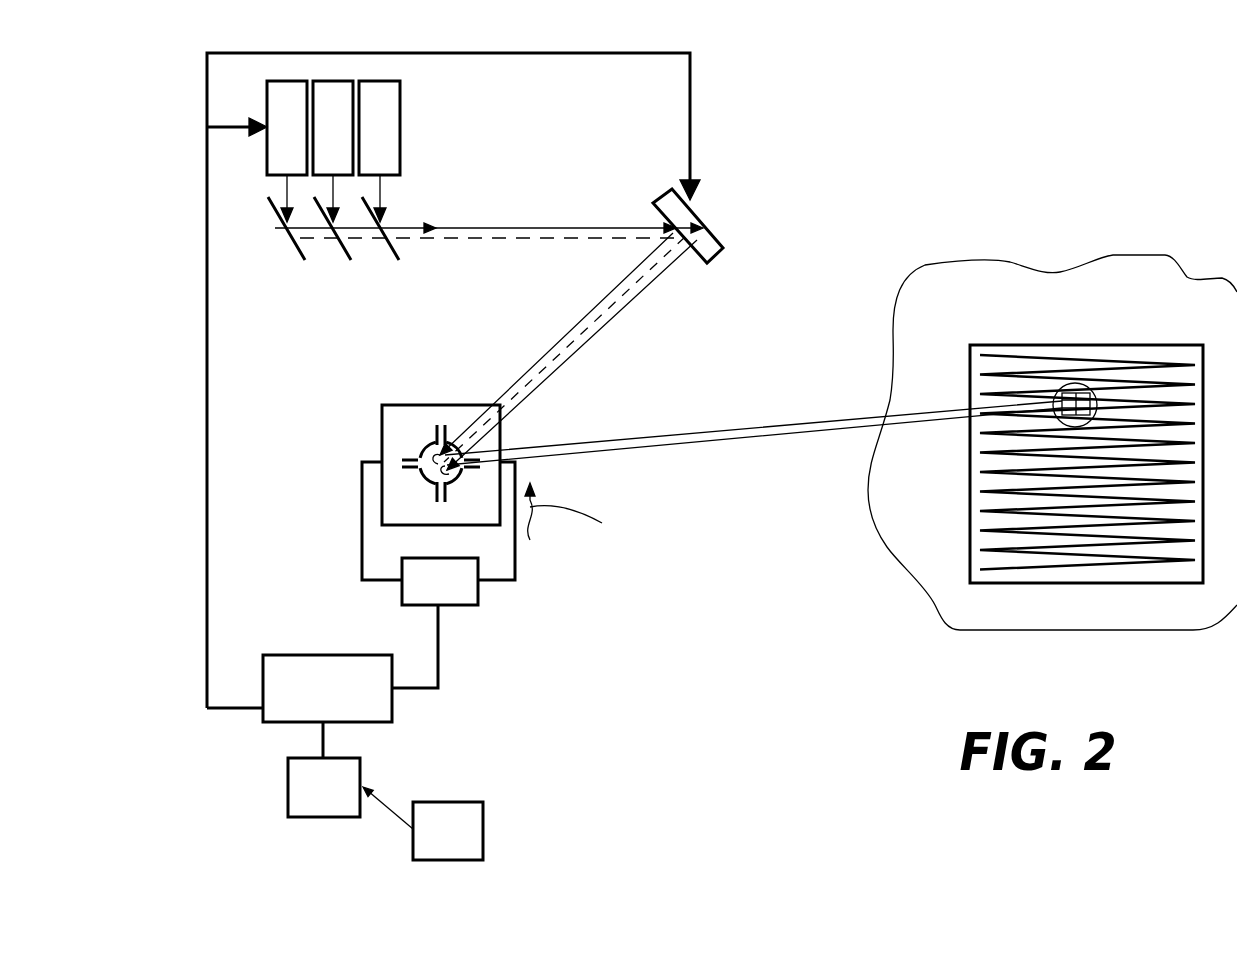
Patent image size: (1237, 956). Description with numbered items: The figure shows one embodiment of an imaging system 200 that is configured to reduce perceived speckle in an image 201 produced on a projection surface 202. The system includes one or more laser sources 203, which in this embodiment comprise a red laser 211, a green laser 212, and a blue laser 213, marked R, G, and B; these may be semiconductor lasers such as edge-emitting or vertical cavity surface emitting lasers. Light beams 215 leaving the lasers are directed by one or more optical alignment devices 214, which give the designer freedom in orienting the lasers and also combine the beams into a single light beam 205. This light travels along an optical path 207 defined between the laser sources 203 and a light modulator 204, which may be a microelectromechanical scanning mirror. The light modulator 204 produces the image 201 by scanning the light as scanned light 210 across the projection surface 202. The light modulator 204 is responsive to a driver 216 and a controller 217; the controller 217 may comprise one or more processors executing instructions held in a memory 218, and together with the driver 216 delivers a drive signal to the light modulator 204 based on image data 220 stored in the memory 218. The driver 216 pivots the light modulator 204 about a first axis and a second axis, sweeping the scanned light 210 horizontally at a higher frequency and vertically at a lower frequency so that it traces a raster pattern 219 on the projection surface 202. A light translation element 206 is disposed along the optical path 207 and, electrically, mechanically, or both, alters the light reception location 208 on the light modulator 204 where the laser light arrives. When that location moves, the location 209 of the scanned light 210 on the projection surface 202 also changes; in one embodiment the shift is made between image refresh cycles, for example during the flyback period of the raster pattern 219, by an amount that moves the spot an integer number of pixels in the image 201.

The imaging system 200 is at (852, 225).
The image 201 is at (1066, 441).
The projection surface 202 is at (1113, 255).
The laser sources 203 is at (629, 251).
The light modulator 204 is at (395, 460).
The single light beam 205 is at (480, 228).
The light translation element 206 is at (725, 250).
The optical path 207 is at (470, 238).
The light reception location 208 is at (418, 468).
The location of scanned light 209 is at (1072, 385).
The scanned light 210 is at (655, 452).
The red laser 211 is at (280, 152).
The green laser 212 is at (333, 88).
The blue laser 213 is at (392, 143).
The optical alignment devices 214 is at (400, 259).
The light beams 215 is at (287, 186).
The driver 216 is at (452, 605).
The controller 217 is at (314, 655).
The memory 218 is at (288, 806).
The raster pattern 219 is at (1003, 350).
The image data 220 is at (485, 826).